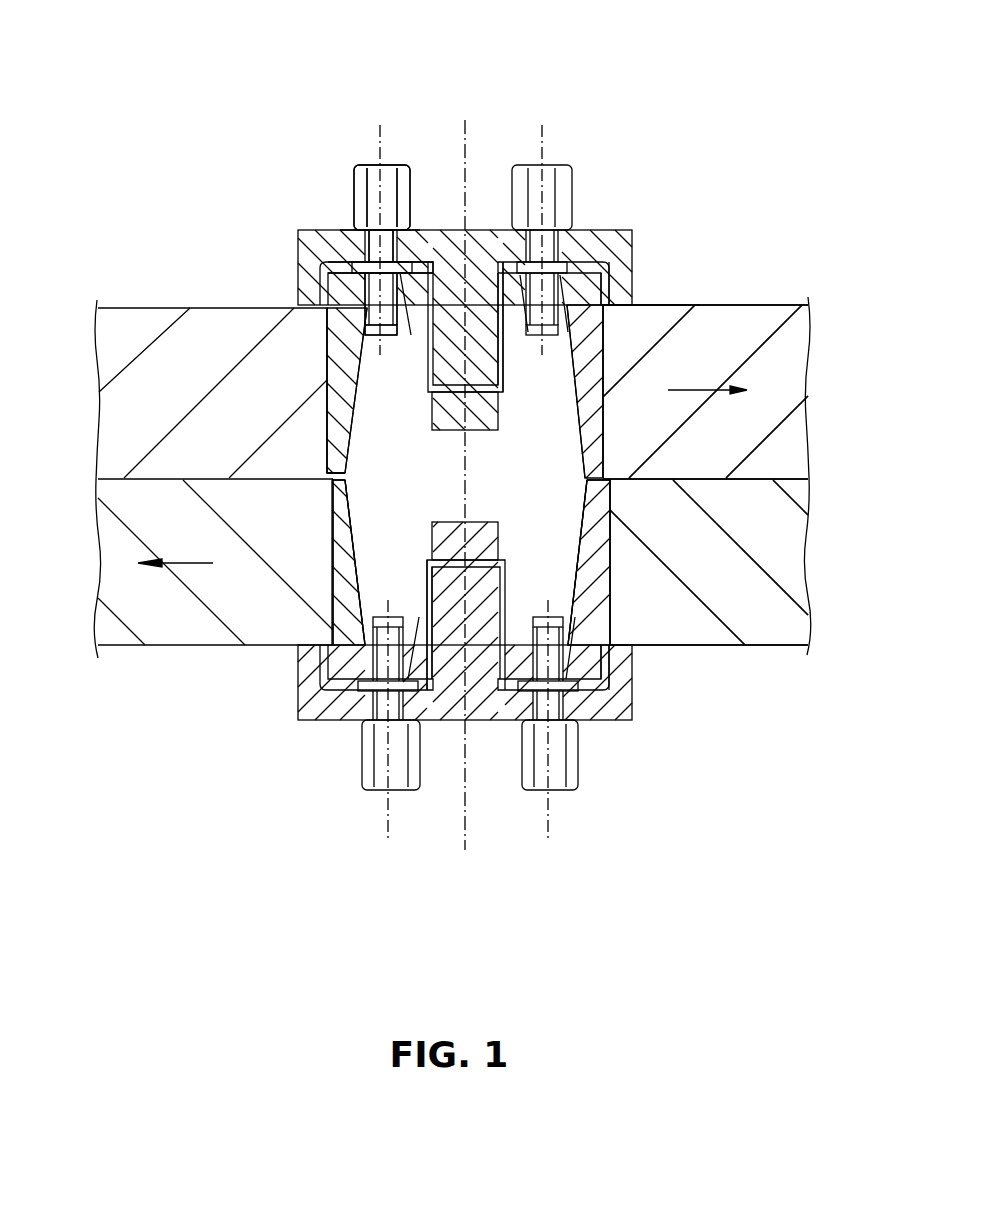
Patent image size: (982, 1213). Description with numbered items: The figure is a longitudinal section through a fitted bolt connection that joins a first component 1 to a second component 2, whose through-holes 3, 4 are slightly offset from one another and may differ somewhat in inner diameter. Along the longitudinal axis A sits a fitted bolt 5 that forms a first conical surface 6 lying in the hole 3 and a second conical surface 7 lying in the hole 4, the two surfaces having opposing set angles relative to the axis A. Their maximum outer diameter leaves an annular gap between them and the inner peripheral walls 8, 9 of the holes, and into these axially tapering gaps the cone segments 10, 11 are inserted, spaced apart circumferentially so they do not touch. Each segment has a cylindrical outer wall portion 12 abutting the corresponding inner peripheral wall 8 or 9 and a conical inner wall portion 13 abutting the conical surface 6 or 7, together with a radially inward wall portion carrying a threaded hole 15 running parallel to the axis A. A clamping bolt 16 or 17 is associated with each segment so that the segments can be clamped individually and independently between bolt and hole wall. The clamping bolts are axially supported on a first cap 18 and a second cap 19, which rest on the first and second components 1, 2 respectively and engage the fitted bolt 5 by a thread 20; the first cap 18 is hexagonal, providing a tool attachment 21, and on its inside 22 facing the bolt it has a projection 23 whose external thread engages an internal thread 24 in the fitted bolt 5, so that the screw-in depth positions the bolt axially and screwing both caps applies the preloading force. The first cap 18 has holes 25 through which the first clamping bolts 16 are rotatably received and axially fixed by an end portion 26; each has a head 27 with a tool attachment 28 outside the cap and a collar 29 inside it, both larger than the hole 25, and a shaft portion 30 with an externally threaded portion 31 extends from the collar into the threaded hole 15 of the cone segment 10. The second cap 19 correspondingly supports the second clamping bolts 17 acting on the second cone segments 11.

The first component 1 is at (677, 451).
The second component 2 is at (677, 533).
The hole 3 is at (642, 350).
The hole 4 is at (582, 543).
The fitted bolt 5 is at (512, 491).
The first conical surface 6 is at (660, 305).
The second conical surface 7 is at (605, 561).
The inner peripheral wall 8 is at (603, 333).
The inner peripheral wall 9 is at (614, 604).
The cone segment 10 is at (337, 435).
The cone segment 11 is at (345, 573).
The cylindrical outer wall portion 12 is at (352, 400).
The conical inner wall portion 13 is at (353, 417).
The threaded hole 15 is at (372, 308).
The clamping bolt 16 is at (523, 177).
The clamping bolt 17 is at (540, 767).
The first cap 18 is at (307, 243).
The second cap 19 is at (328, 712).
The thread 20 is at (507, 380).
The tool attachment 21 is at (360, 230).
The inside 22 is at (340, 262).
The projection 23 is at (517, 293).
The internal thread 24 is at (562, 297).
The hole 25 is at (360, 240).
The end portion 26 is at (385, 243).
The head 27 is at (376, 170).
The tool attachment 28 is at (360, 183).
The collar 29 is at (360, 253).
The shaft portion 30 is at (373, 263).
The externally threaded portion 31 is at (375, 296).
The longitudinal axis A is at (465, 483).